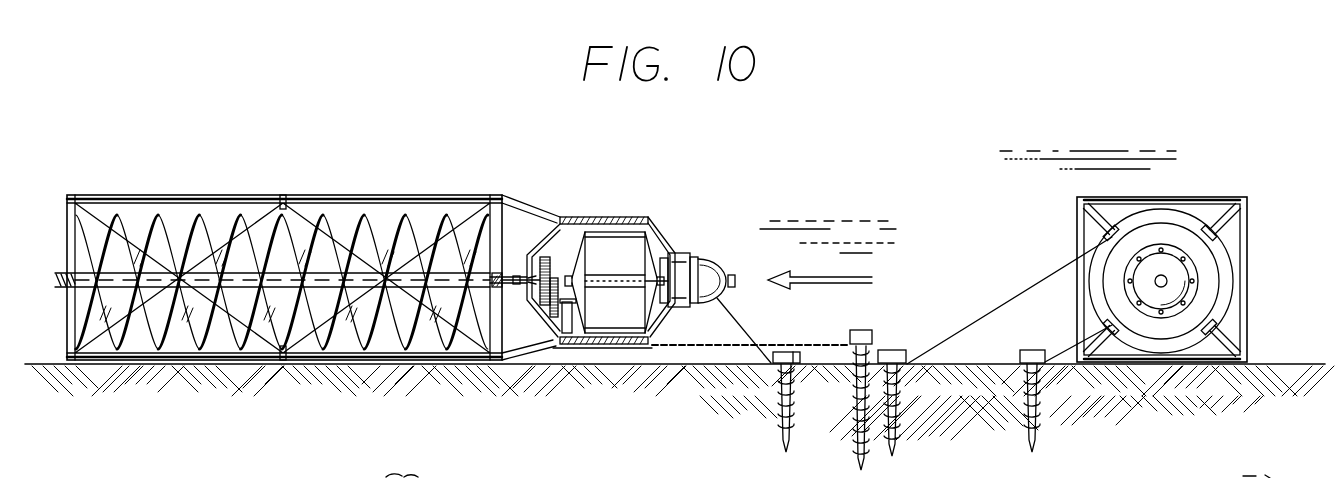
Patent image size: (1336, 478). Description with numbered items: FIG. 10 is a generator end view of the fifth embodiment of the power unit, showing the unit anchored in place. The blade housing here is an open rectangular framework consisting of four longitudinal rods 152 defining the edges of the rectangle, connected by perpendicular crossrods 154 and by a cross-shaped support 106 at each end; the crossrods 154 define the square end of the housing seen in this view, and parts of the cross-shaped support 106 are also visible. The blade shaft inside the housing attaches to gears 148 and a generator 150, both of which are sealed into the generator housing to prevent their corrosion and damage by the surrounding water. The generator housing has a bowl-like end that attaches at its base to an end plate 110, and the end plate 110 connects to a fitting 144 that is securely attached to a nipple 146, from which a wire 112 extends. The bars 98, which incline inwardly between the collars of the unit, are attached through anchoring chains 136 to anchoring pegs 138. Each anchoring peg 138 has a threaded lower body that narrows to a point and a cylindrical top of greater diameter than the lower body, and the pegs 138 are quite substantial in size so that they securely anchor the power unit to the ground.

The bars 98 is at (1225, 228).
The cross-shaped support 106 is at (1155, 363).
The end plate 110 is at (1192, 270).
The wire 112 is at (730, 284).
The anchoring chains 136 is at (824, 343).
The anchoring pegs 138 is at (896, 417).
The fitting 144 is at (706, 258).
The nipple 146 is at (712, 270).
The gears 148 is at (553, 340).
The generator 150 is at (622, 312).
The longitudinal rods 152 is at (378, 196).
The crossrods 154 is at (498, 228).